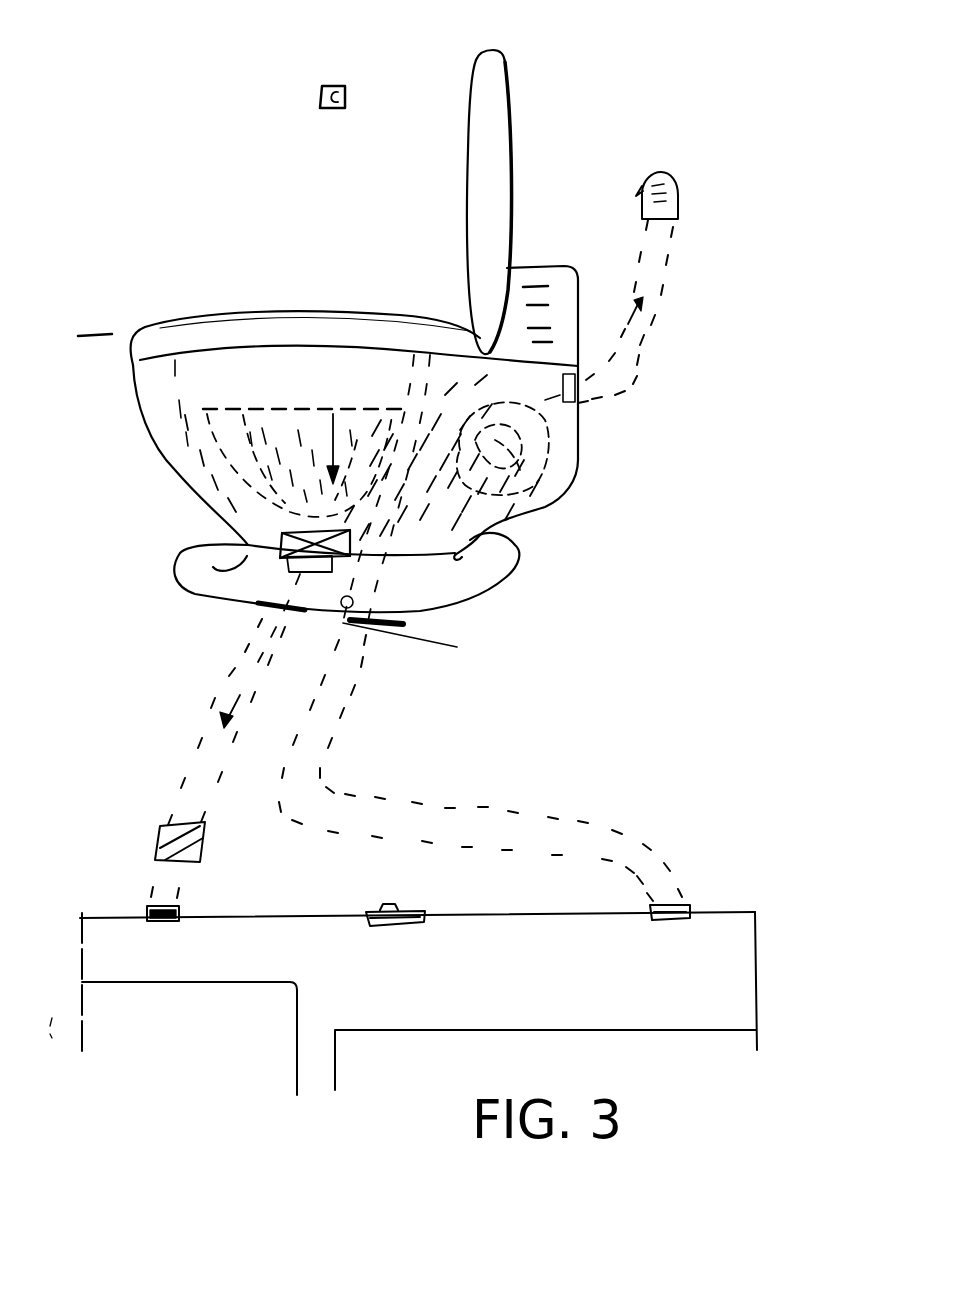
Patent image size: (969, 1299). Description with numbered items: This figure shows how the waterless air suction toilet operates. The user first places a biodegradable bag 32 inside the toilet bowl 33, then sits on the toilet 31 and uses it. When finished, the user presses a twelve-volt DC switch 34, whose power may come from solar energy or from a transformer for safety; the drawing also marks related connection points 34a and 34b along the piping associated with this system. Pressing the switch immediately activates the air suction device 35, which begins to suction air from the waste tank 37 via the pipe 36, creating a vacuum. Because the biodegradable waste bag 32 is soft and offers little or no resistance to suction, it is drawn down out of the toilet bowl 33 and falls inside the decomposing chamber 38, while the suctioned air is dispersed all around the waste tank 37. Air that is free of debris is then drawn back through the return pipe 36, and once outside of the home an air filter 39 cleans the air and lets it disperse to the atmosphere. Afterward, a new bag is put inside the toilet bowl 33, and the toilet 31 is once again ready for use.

The toilet 31 is at (108, 421).
The biodegradable bag 32 is at (233, 464).
The toilet bowl 33 is at (230, 495).
The 12 VDC switch 34 is at (352, 74).
The upper pipe fitting 34a is at (278, 548).
The lower pipe fitting 34b is at (210, 849).
The air suction device 35 is at (542, 445).
The pipe 36 is at (482, 808).
The waste tank 37 is at (742, 990).
The decomposing chamber 38 is at (160, 1014).
The air filter 39 is at (692, 203).